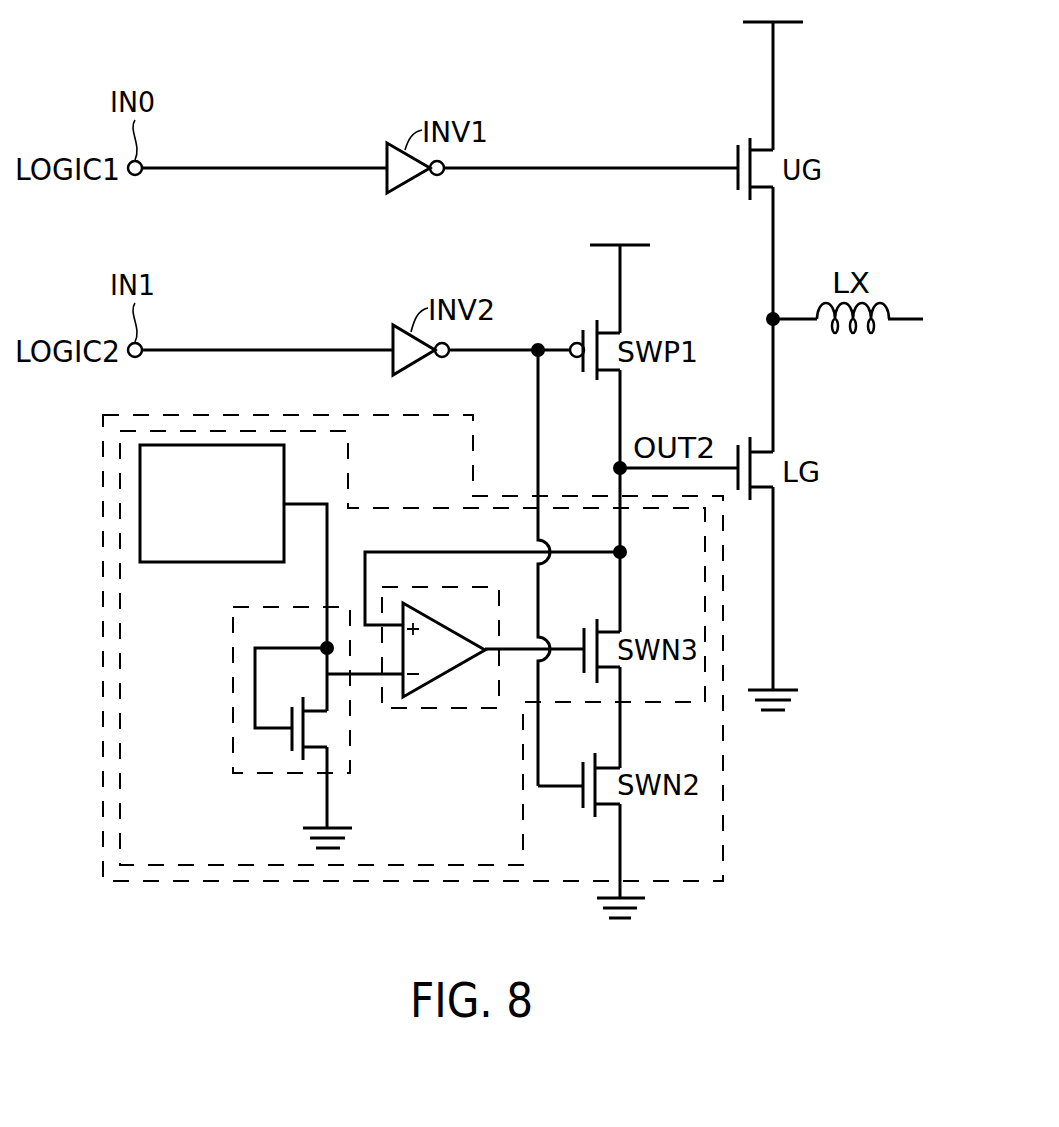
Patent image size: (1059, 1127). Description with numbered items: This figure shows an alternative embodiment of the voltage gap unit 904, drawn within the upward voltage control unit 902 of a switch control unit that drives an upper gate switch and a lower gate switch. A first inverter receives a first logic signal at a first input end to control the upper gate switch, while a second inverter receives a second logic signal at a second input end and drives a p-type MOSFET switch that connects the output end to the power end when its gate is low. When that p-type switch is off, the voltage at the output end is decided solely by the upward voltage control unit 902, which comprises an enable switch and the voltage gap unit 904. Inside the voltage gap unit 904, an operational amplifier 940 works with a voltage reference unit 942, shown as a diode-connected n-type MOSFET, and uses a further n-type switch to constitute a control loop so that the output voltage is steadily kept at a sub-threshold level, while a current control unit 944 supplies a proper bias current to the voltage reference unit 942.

The upward voltage control unit 902 is at (410, 882).
The voltage gap unit 904 is at (348, 483).
The operational amplifier 940 is at (440, 709).
The voltage reference unit 942 is at (232, 691).
The current control unit 944 is at (168, 563).